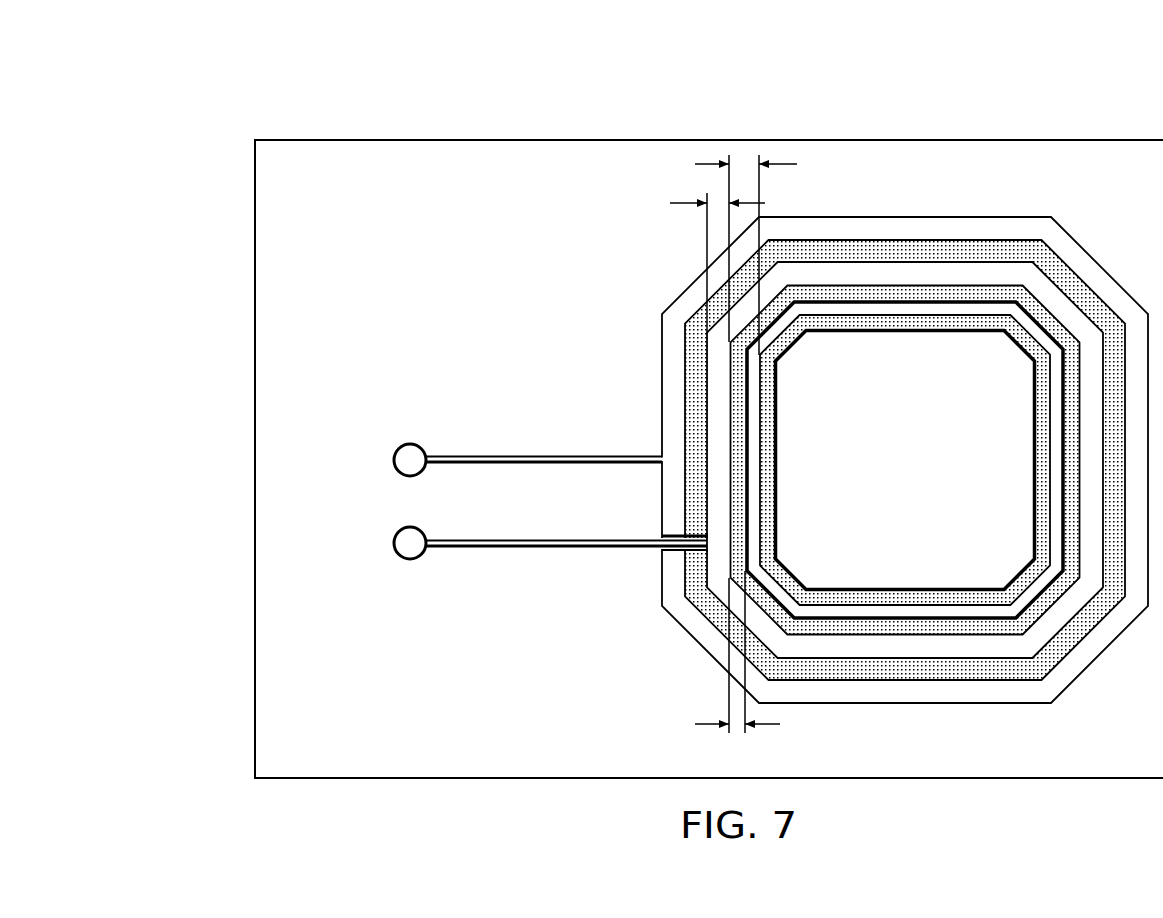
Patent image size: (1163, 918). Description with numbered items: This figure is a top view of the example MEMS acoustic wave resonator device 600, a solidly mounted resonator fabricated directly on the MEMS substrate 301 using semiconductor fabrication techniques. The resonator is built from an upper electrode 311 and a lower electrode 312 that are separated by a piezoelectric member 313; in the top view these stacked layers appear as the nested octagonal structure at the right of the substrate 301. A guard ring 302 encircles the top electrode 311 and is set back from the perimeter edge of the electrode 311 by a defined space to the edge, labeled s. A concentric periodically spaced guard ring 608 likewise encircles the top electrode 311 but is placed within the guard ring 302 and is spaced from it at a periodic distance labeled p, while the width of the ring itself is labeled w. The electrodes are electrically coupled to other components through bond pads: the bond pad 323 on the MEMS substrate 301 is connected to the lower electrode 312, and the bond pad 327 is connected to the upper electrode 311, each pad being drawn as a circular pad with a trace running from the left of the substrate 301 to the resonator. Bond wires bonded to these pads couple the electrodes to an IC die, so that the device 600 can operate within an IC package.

The MEMS acoustic wave resonator device 600 is at (670, 403).
The MEMS substrate 301 is at (254, 460).
The guard ring 302 is at (866, 443).
The upper electrode 311 is at (717, 384).
The lower electrode 312 is at (670, 437).
The piezoelectric member 313 is at (697, 408).
The bond pad 323 is at (410, 443).
The bond pad 327 is at (410, 559).
The concentric periodically spaced guard ring 608 is at (767, 458).